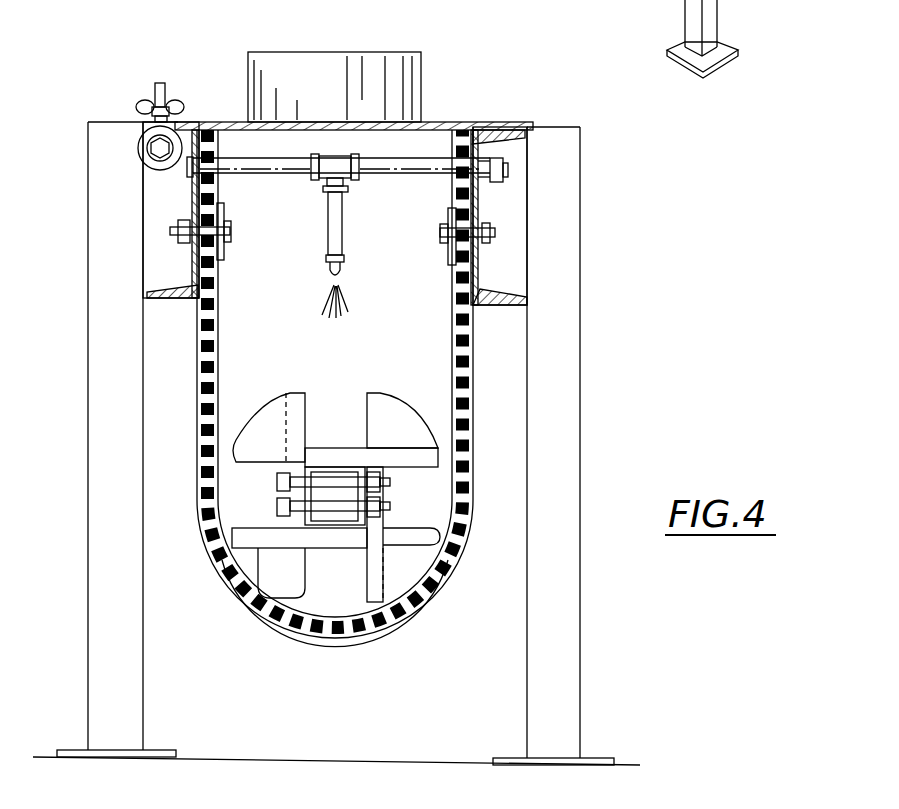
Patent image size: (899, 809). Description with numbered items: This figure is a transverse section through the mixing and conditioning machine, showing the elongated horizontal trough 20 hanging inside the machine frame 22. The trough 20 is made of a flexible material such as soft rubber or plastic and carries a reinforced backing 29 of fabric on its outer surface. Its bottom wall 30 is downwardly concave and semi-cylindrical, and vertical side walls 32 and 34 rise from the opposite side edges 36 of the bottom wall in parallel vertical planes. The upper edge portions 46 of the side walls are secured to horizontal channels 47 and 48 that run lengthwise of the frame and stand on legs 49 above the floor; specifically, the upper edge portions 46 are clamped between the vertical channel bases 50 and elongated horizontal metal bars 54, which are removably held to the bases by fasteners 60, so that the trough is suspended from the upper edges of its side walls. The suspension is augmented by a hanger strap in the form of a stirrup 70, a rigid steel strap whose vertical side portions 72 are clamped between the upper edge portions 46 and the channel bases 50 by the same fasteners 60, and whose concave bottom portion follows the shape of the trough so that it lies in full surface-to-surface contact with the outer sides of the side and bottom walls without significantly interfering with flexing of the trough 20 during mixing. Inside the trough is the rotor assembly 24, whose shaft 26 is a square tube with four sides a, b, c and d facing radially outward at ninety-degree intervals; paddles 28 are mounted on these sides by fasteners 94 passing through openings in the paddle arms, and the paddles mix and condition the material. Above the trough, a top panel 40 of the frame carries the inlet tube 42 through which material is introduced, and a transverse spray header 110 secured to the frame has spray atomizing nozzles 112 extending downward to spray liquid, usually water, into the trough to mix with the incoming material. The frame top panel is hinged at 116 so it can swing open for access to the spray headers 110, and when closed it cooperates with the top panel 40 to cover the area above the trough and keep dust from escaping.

The trough 20 is at (269, 397).
The machine frame 22 is at (592, 264).
The rotor assembly 24 is at (374, 505).
The shaft 26 is at (362, 540).
The paddles 28 is at (378, 347).
The reinforced backing 29 is at (470, 423).
The bottom wall 30 is at (296, 624).
The side wall 32 is at (210, 327).
The side wall 34 is at (473, 354).
The side edges 36 is at (200, 507).
The top panel 40 is at (487, 122).
The inlet tube 42 is at (330, 52).
The upper edge portions 46 is at (207, 208).
The channel 47 is at (183, 283).
The channel 48 is at (497, 290).
The legs 49 is at (97, 637).
The channel bases 50 is at (190, 190).
The bars 54 is at (225, 252).
The fasteners 60 is at (228, 223).
The stirrups 70 is at (486, 460).
The side portions 72 is at (200, 432).
The fasteners 94 is at (352, 470).
The spray headers 110 is at (226, 146).
The spray atomizing nozzles 112 is at (345, 247).
The hinge 116 is at (537, 123).
The shaft side a is at (328, 448).
The shaft side b is at (278, 496).
The shaft side c is at (327, 548).
The shaft side d is at (390, 498).